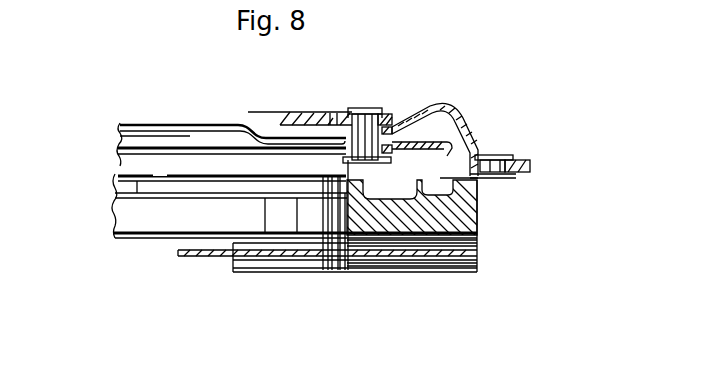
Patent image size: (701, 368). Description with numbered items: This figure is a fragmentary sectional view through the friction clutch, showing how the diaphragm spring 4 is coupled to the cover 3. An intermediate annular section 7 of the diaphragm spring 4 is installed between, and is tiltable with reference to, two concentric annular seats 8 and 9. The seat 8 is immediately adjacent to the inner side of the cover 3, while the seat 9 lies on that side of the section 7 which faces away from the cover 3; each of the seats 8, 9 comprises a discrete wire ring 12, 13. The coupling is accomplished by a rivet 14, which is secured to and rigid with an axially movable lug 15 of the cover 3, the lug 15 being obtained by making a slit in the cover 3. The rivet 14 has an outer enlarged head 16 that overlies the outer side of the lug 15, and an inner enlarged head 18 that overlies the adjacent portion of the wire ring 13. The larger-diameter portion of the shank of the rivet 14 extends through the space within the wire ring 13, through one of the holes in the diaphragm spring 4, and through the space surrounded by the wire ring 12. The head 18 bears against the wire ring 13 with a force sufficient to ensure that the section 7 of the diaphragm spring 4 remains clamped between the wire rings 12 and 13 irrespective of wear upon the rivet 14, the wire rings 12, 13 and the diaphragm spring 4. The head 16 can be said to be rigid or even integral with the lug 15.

The cover 3 is at (498, 118).
The diaphragm spring 4 is at (233, 140).
The intermediate annular section of the diaphragm spring 7 is at (440, 107).
The annular seat 8 is at (412, 103).
The annular seat 9 is at (462, 168).
The wire ring 12 is at (457, 120).
The wire ring 13 is at (495, 192).
The rivet 14 is at (352, 124).
The lug 15 is at (387, 122).
The outer head of the rivet 16 is at (357, 107).
The inner head of the rivet 18 is at (348, 162).